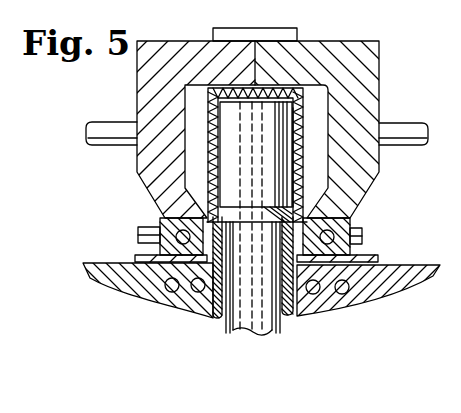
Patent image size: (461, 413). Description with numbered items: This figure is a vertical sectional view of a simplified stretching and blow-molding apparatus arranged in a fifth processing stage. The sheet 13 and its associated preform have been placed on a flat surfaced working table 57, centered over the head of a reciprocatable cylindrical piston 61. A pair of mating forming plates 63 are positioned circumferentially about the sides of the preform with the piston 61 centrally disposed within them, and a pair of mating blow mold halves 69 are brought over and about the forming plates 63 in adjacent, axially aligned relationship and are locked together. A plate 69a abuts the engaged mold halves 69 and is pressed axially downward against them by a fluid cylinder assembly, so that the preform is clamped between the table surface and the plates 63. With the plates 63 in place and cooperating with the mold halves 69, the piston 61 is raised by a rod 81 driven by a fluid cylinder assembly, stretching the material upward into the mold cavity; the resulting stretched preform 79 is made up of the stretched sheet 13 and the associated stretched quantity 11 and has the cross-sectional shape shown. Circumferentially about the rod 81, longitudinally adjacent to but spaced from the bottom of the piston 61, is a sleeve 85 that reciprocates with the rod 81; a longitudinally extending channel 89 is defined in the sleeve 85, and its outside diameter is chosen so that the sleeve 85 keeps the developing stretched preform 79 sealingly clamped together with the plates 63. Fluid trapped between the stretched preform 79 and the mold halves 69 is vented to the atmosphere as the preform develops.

The stretched quantity 11 is at (207, 165).
The sheet 13 is at (140, 258).
The working table 57 is at (382, 288).
The cylindrical piston 61 is at (283, 185).
The forming plates 63 is at (170, 225).
The blow mold halves 69 is at (137, 97).
The plate 69a is at (297, 32).
The stretched preform 79 is at (305, 128).
The rod 81 is at (248, 323).
The sleeve 85 is at (310, 313).
The channel 89 is at (220, 318).